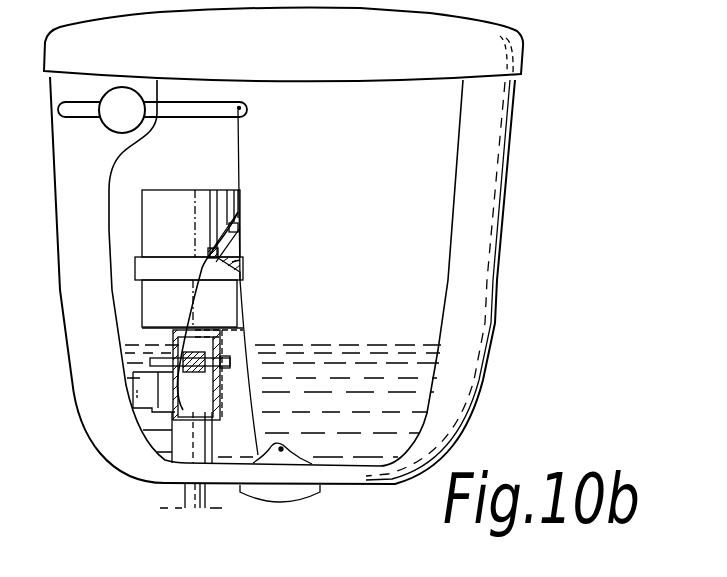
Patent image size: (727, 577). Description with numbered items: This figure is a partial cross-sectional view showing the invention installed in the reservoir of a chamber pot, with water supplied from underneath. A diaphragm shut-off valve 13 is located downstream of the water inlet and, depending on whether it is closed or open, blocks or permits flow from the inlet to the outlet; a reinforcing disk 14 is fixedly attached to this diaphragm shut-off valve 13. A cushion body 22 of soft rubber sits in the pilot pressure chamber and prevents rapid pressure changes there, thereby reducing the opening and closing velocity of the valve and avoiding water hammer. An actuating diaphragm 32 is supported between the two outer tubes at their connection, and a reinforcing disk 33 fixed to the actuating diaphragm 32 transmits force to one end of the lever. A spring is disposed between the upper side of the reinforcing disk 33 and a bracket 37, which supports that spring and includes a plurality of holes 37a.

The diaphragm shut-off valve 13 is at (203, 362).
The reinforcing disk 14 is at (185, 352).
The cushion body 22 is at (203, 323).
The actuating diaphragm 32 is at (197, 283).
The reinforcing disk 33 is at (208, 250).
The bracket 37 is at (235, 240).
The holes 37a is at (232, 230).